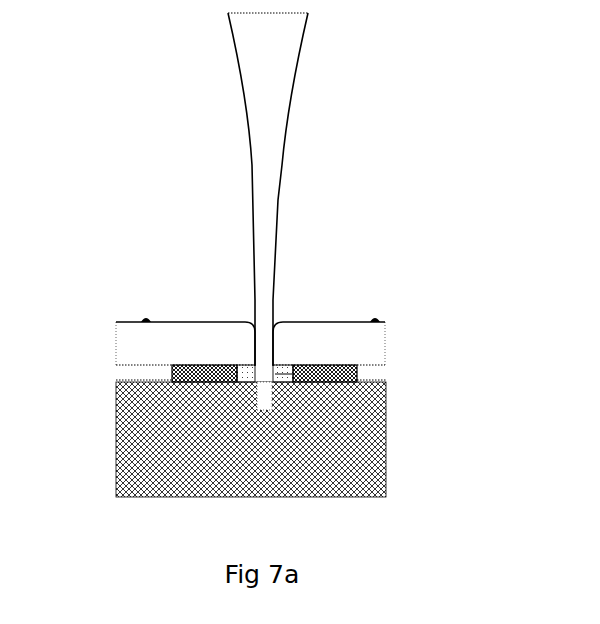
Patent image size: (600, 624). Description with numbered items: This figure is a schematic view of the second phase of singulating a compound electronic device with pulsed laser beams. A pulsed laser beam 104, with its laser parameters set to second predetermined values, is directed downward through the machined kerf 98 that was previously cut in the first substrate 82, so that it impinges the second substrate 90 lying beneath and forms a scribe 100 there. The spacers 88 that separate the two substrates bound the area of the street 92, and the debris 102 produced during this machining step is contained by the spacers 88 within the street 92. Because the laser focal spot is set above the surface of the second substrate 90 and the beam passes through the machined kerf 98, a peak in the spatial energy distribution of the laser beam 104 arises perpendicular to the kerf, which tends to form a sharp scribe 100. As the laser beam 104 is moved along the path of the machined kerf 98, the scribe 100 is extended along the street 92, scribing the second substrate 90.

The pulsed laser beam 104 is at (254, 187).
The first substrate 82 is at (122, 338).
The street 92 is at (247, 364).
The machined kerf 98 is at (283, 360).
The spacers 88 is at (197, 382).
The second substrate 90 is at (118, 424).
The scribe 100 is at (266, 418).
The debris 102 is at (278, 374).